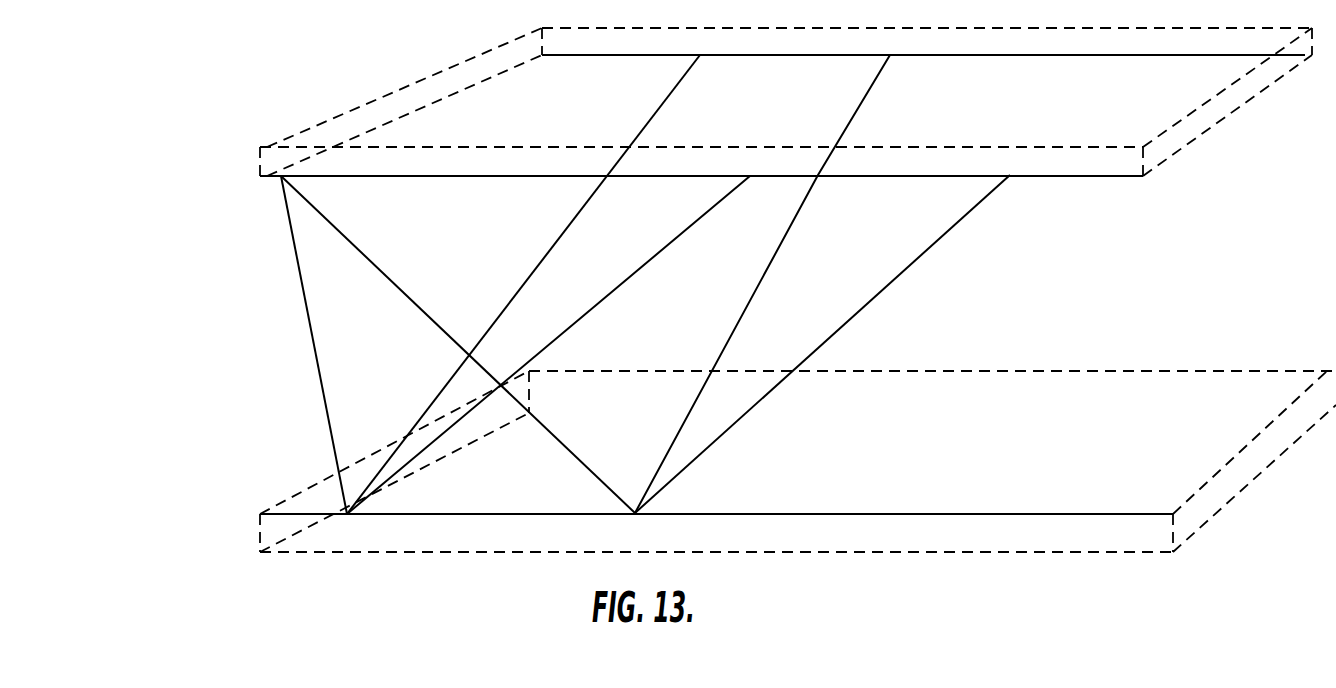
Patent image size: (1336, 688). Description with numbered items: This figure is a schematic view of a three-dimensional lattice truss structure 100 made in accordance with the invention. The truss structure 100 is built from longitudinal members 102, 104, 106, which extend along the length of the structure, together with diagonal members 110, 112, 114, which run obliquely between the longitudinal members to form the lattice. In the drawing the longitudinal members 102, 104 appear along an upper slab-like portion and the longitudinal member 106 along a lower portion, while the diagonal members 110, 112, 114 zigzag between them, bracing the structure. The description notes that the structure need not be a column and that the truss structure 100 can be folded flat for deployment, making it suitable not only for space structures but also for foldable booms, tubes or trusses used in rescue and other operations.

The truss structure 100 is at (125, 352).
The longitudinal member 102 is at (637, 176).
The longitudinal member 104 is at (745, 55).
The longitudinal member 106 is at (472, 514).
The diagonal member 110 is at (555, 438).
The diagonal member 112 is at (565, 333).
The diagonal member 114 is at (518, 293).